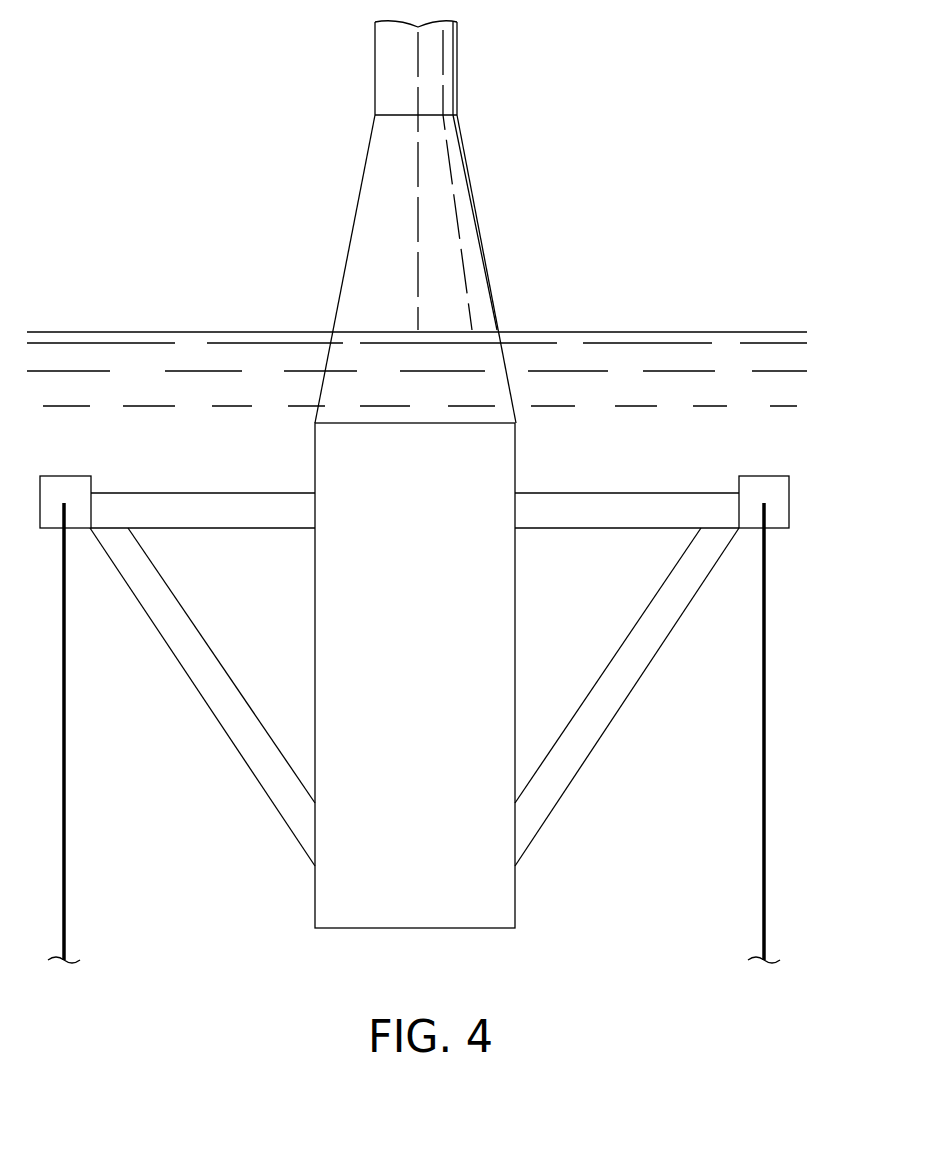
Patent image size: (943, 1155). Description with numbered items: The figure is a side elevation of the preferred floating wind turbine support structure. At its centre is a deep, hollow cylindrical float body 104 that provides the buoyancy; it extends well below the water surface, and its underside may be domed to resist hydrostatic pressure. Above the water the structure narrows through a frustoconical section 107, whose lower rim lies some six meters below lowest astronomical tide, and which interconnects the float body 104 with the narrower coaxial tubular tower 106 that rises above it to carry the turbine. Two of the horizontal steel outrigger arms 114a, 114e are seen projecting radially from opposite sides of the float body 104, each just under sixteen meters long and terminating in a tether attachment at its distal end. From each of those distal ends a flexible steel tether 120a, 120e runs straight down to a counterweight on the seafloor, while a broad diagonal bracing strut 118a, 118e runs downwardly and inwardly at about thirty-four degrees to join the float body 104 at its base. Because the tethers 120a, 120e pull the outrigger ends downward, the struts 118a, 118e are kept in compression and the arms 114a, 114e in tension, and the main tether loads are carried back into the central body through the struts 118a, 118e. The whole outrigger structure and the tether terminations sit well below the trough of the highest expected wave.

The float body 104 is at (517, 892).
The tower 106 is at (448, 79).
The frustoconical section 107 is at (485, 263).
The outrigger arm 114a is at (214, 492).
The outrigger arm 114e is at (629, 492).
The bracing strut 118a is at (185, 659).
The bracing strut 118e is at (617, 712).
The tether 120a is at (66, 887).
The tether 120e is at (764, 813).